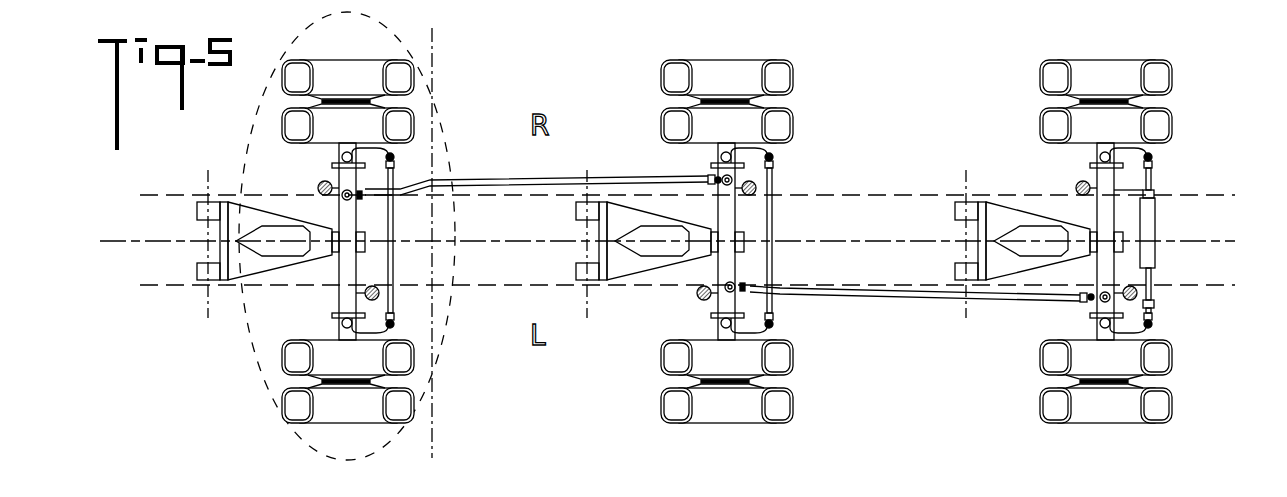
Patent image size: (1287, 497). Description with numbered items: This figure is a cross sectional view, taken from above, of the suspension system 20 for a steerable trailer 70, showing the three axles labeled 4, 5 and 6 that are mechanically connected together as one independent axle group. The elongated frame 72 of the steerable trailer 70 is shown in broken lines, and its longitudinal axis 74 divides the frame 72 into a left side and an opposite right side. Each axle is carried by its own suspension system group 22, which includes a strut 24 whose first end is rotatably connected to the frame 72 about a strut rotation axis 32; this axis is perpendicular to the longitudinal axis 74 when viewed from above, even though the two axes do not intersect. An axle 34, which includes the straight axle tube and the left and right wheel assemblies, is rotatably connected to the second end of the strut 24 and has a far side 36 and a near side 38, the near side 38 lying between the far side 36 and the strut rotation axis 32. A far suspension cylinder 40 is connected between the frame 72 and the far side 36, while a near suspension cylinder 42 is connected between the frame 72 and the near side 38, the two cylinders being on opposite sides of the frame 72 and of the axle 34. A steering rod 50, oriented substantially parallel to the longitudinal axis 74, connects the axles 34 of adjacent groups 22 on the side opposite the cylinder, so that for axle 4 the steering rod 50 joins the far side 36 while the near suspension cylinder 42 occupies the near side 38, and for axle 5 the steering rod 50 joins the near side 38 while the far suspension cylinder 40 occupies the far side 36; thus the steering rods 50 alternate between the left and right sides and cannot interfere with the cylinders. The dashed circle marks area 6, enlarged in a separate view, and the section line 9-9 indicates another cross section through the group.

The suspension system 20 is at (968, 52).
The suspension system group 22 is at (456, 114).
The strut 24 is at (274, 262).
The strut rotation axis 32 is at (208, 186).
The axle 34 is at (371, 287).
The far side 36 is at (352, 263).
The near side 38 is at (343, 300).
The far suspension cylinder 40 is at (394, 313).
The near suspension cylinder 42 is at (318, 186).
The steering rod 50 is at (497, 183).
The steerable trailer 70 is at (186, 186).
The frame 72 is at (879, 195).
The longitudinal axis 74 is at (160, 240).
The axle 4 is at (356, 477).
The axle 5 is at (730, 477).
The area 6 is at (347, 230).
The section line 9- 9 is at (420, 42).